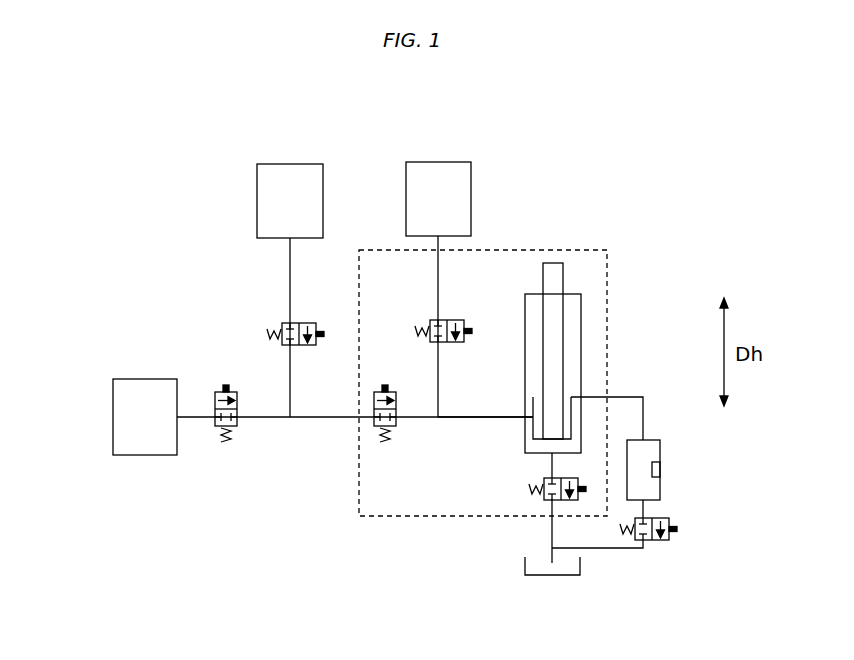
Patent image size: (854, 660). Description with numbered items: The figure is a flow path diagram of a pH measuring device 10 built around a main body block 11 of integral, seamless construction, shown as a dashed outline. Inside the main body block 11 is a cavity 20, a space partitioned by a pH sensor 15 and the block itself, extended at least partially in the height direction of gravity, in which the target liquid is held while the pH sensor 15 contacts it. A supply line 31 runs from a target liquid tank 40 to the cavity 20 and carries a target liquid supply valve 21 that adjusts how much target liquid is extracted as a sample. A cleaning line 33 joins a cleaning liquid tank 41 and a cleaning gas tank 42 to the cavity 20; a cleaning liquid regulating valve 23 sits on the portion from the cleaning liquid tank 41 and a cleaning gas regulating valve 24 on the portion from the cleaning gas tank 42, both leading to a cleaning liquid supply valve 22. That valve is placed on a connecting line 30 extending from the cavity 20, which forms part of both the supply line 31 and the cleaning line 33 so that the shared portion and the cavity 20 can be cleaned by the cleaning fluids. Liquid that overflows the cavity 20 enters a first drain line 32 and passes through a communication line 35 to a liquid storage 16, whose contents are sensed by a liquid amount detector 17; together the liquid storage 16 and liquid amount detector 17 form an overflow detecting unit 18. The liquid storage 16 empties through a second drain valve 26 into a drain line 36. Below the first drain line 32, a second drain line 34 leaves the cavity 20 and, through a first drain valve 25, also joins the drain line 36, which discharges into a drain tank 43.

The pH measuring device 10 is at (508, 302).
The main body block 11 is at (585, 249).
The pH sensor 15 is at (552, 266).
The liquid storage 16 is at (660, 445).
The liquid amount detector 17 is at (660, 470).
The overflow detecting unit 18 is at (686, 466).
The cavity 20 is at (547, 443).
The target liquid supply valve 21 is at (457, 319).
The cleaning liquid supply valve 22 is at (390, 384).
The cleaning liquid regulating valve 23 is at (230, 384).
The cleaning gas regulating valve 24 is at (306, 322).
The first drain valve 25 is at (540, 498).
The second drain valve 26 is at (665, 517).
The connecting line 30 is at (452, 418).
The supply line 31 is at (437, 270).
The first drain line 32 is at (572, 397).
The cleaning line 33 is at (193, 416).
The second drain line 34 is at (553, 462).
The communication line 35 is at (636, 396).
The drain line 36 is at (556, 527).
The target liquid tank 40 is at (438, 161).
The cleaning liquid tank 41 is at (142, 378).
The cleaning gas tank 42 is at (290, 163).
The drain tank 43 is at (550, 576).